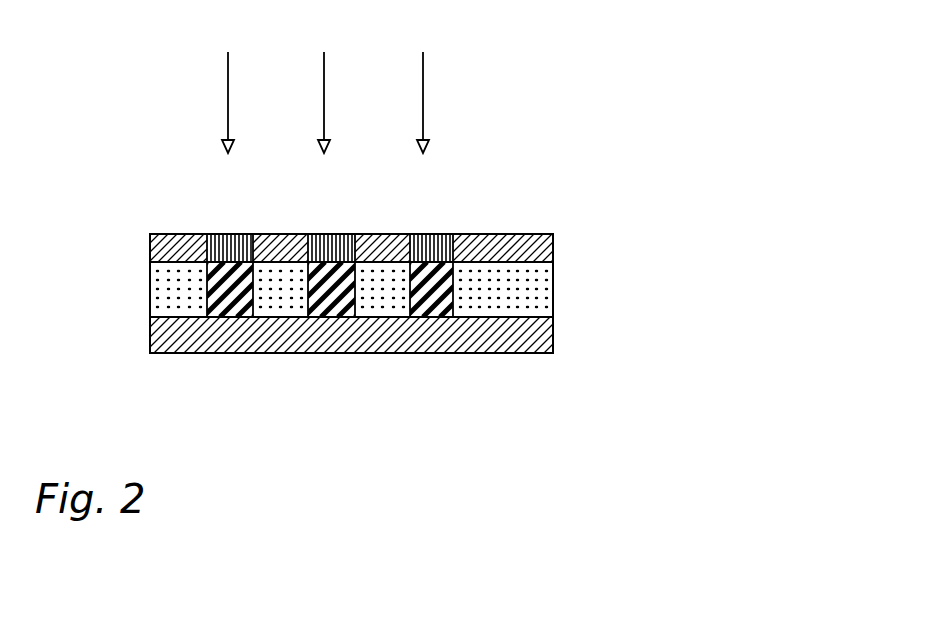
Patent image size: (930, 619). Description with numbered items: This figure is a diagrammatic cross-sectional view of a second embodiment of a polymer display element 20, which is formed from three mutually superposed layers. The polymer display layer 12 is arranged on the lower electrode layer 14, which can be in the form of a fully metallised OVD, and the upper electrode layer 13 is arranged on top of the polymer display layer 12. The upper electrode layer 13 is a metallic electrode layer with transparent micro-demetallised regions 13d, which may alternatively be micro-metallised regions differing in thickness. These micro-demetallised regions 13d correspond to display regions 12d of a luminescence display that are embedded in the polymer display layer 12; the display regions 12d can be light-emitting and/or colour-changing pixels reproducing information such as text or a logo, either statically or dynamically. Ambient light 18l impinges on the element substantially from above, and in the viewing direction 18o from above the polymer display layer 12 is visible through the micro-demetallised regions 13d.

The polymer display layer 12 is at (553, 300).
The display regions 12d is at (437, 305).
The upper electrode layer 13 is at (553, 250).
The micro-demetallised regions 13d is at (438, 234).
The lower electrode layer 14 is at (553, 350).
The ambient light 18l is at (228, 88).
The viewing direction from above 18o is at (323, 72).
The polymer display element 20 is at (665, 272).